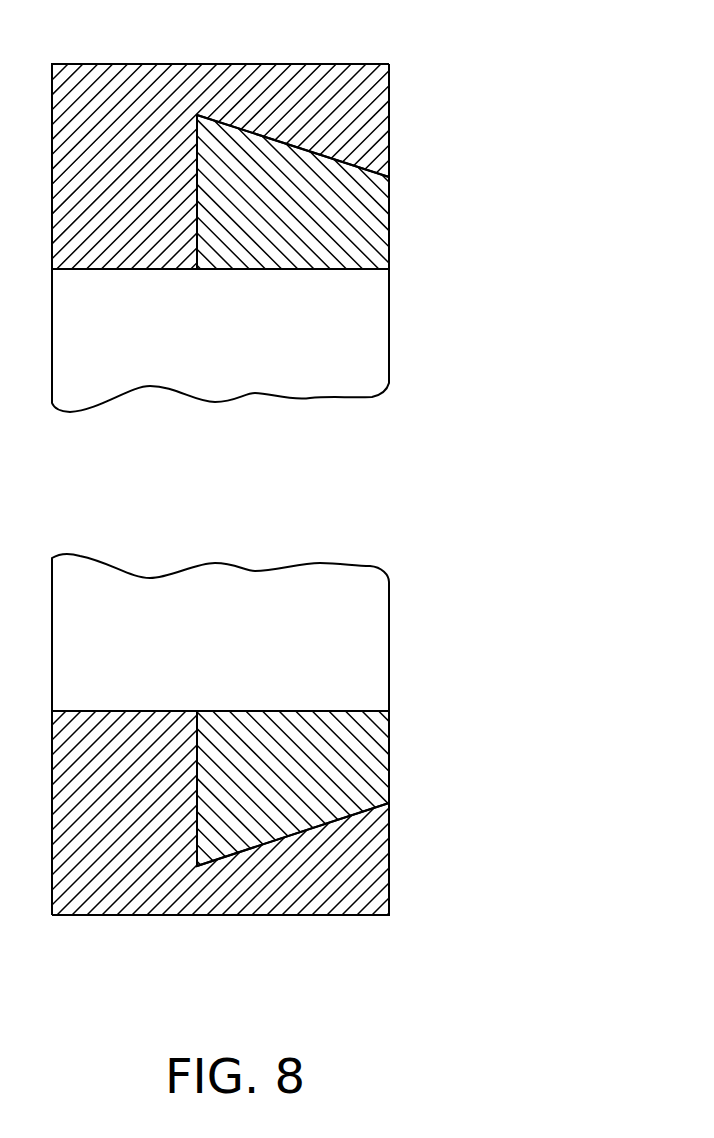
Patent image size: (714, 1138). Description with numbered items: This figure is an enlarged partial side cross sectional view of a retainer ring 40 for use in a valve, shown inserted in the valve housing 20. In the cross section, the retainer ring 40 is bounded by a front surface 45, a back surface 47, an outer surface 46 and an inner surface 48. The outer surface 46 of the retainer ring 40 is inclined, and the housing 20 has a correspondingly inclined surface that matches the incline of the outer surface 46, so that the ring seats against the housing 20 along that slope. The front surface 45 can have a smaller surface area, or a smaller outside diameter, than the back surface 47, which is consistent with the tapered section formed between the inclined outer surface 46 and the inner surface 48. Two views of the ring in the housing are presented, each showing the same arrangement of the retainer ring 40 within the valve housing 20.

The valve housing 20 is at (389, 133).
The retainer ring 40 is at (363, 220).
The front surface 45 is at (389, 253).
The outer surface 46 is at (262, 130).
The back surface 47 is at (193, 207).
The inner surface 48 is at (245, 269).